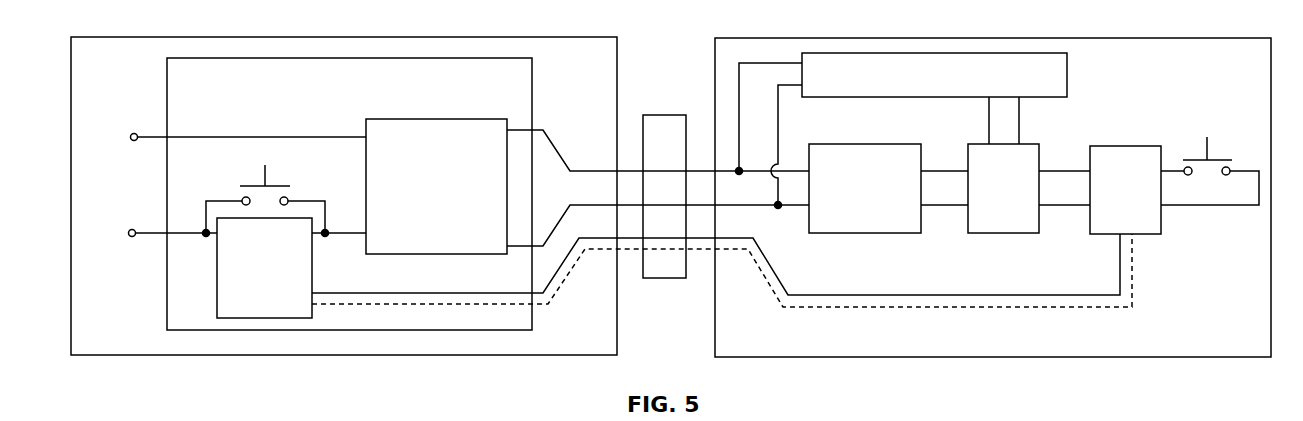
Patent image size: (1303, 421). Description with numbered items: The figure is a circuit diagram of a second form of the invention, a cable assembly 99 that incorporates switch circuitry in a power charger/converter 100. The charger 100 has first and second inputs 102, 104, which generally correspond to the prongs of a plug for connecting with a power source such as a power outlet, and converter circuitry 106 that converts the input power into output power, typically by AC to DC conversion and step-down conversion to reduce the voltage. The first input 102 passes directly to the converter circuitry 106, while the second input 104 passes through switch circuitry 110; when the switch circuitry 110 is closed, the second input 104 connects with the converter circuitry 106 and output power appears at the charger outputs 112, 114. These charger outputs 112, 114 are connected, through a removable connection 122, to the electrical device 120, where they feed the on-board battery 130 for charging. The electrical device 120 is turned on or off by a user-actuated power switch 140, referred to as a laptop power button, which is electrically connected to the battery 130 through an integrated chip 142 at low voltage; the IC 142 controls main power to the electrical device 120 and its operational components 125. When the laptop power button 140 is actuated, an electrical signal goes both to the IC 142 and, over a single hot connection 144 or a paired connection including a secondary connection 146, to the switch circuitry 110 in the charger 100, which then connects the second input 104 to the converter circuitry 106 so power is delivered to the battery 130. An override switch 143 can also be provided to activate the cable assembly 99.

The cable assembly 99 is at (617, 293).
The power charger/converter 100 is at (532, 318).
The first input 102 is at (122, 147).
The second input 104 is at (122, 244).
The converter circuitry 106 is at (430, 118).
The switch circuitry 110 is at (313, 259).
The charger output 112 is at (597, 169).
The charger output 114 is at (597, 204).
The electrical device 120 is at (714, 328).
The connection 122 is at (665, 114).
The operational components 125 is at (1067, 73).
The on-board battery 130 is at (858, 144).
The user-actuated power switch 140 is at (1127, 146).
The integrated chip 142 is at (1025, 144).
The override switch 143 is at (271, 177).
The hot connection 144 is at (862, 295).
The secondary connection 146 is at (860, 307).